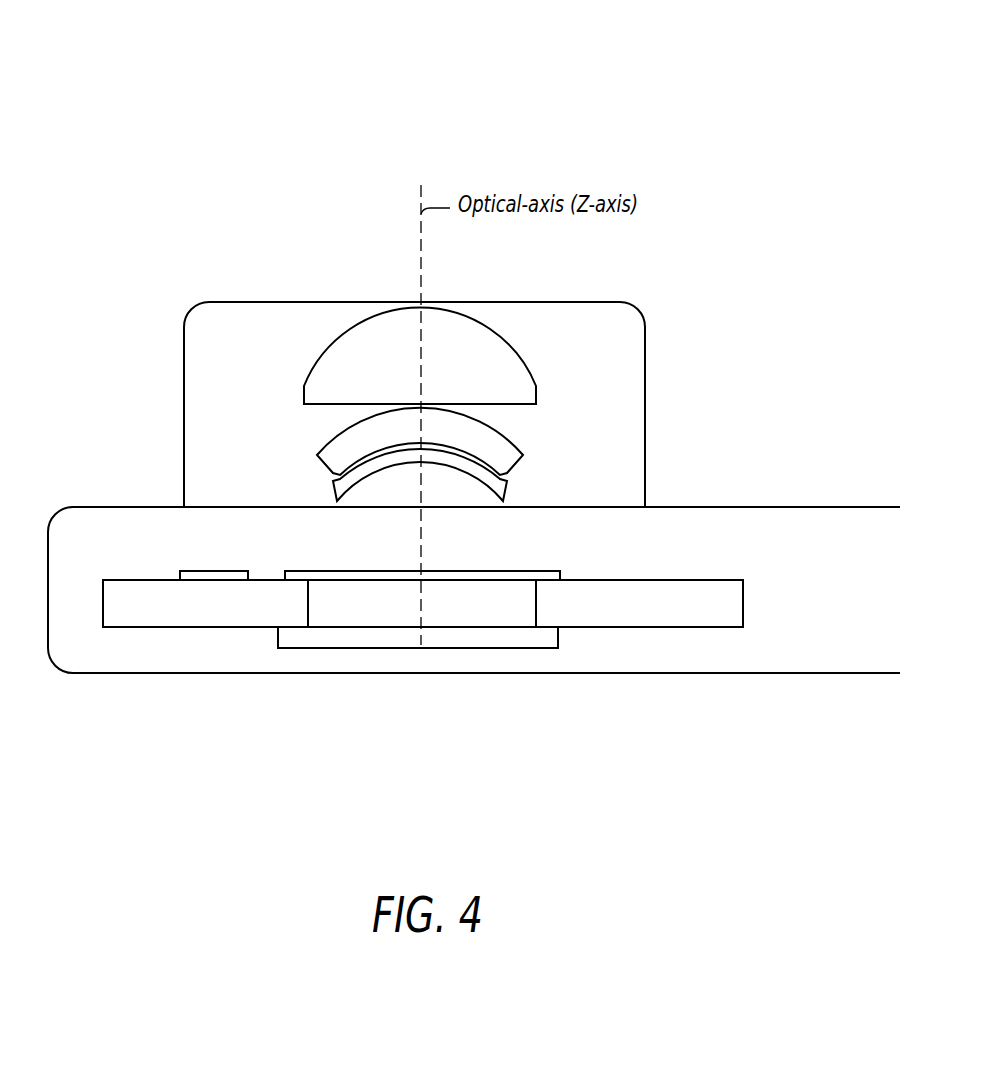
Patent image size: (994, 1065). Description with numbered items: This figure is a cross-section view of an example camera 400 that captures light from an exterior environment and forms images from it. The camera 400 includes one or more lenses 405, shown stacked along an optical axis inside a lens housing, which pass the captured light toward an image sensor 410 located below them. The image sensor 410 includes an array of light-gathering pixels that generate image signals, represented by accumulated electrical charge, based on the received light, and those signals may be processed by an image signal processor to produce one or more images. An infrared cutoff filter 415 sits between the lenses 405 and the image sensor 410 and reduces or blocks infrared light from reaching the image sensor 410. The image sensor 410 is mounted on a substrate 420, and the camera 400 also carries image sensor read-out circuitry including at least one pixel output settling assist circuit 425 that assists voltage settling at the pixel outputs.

The camera 400 is at (652, 120).
The lenses 405 is at (300, 507).
The image sensor 410 is at (558, 638).
The infrared cutoff filter (IRCF) 415 is at (560, 577).
The substrate 420 is at (270, 616).
The pixel output settling assist circuit 425 is at (180, 576).